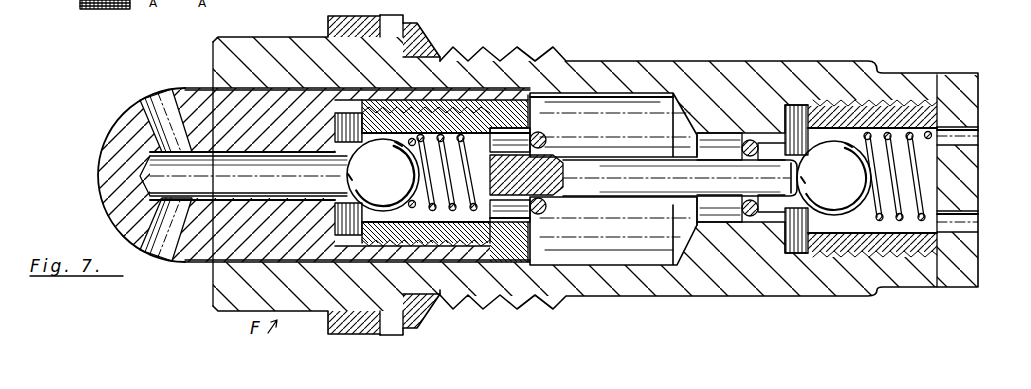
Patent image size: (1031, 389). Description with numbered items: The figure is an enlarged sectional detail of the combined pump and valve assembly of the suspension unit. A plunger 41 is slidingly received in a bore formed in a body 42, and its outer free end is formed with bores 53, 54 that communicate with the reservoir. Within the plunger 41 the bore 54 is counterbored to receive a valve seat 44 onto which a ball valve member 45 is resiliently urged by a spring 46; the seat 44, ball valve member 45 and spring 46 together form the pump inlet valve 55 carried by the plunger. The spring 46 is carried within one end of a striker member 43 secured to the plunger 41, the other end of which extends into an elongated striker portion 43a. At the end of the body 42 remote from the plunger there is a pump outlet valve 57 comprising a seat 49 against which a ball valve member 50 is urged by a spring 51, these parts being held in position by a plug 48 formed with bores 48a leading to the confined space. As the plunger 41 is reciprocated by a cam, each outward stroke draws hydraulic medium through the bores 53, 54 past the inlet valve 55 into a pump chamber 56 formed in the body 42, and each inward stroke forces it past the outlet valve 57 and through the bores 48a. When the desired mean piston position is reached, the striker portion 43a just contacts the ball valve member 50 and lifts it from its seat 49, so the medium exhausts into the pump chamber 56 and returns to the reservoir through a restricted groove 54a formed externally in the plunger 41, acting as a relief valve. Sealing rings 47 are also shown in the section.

The plunger 41 is at (104, 208).
The body 42 is at (215, 283).
The striker member 43 is at (521, 233).
The striker portion 43a is at (653, 182).
The valve seat 44 is at (349, 236).
The ball valve member 45 is at (396, 179).
The spring 46 is at (468, 160).
The sealing rings 47 is at (540, 132).
The plug 48 is at (957, 73).
The bores 48a is at (970, 137).
The seat 49 is at (792, 104).
The ball valve member 50 is at (832, 147).
The spring 51 is at (907, 124).
The bores 53 is at (165, 252).
The bore 54 is at (263, 194).
The restricted groove 54a is at (212, 84).
The pump inlet valve 55 is at (466, 103).
The pump chamber 56 is at (614, 112).
The pump outlet valve 57 is at (878, 250).